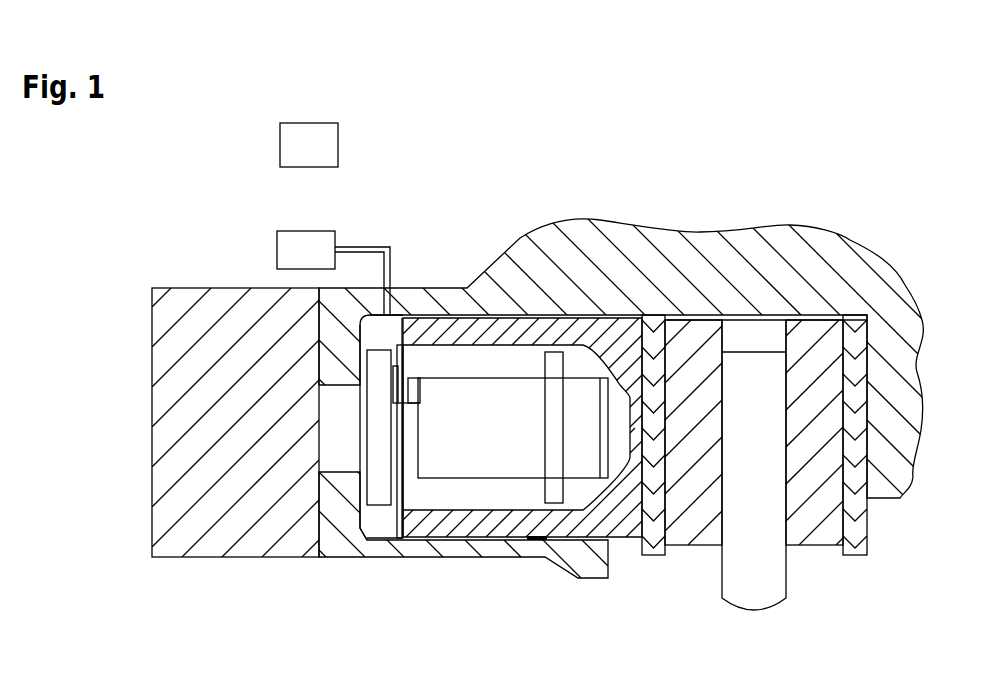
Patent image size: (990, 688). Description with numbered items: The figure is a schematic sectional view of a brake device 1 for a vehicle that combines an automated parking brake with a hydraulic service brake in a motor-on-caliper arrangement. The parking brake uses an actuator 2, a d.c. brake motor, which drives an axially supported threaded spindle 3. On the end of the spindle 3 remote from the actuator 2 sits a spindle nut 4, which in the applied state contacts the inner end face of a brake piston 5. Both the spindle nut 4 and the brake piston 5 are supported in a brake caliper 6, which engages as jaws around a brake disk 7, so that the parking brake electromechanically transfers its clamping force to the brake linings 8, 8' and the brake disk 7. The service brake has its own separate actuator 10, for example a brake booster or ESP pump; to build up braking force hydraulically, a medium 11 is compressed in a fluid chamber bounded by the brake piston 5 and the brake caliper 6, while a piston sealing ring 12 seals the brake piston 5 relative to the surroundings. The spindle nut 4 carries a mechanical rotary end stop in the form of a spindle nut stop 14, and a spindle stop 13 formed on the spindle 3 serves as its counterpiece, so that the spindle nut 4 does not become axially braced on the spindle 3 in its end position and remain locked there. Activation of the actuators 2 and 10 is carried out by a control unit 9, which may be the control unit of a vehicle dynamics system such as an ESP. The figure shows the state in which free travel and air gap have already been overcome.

The brake device 1 is at (890, 194).
The actuator 2 is at (181, 271).
The spindle 3 is at (399, 478).
The spindle nut 4 is at (500, 450).
The brake piston 5 is at (463, 530).
The brake caliper 6 is at (667, 243).
The brake disk 7 is at (750, 606).
The brake lining 8 is at (754, 469).
The brake lining 8' is at (814, 469).
The control unit 9 is at (352, 143).
The actuator 10 is at (348, 232).
The medium 11 is at (372, 527).
The piston sealing ring 12 is at (540, 540).
The spindle stop 13 is at (392, 373).
The spindle nut stop 14 is at (413, 392).